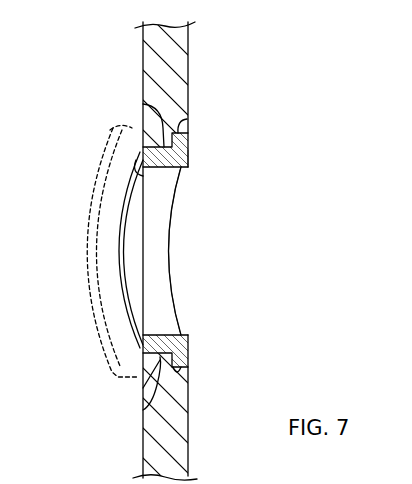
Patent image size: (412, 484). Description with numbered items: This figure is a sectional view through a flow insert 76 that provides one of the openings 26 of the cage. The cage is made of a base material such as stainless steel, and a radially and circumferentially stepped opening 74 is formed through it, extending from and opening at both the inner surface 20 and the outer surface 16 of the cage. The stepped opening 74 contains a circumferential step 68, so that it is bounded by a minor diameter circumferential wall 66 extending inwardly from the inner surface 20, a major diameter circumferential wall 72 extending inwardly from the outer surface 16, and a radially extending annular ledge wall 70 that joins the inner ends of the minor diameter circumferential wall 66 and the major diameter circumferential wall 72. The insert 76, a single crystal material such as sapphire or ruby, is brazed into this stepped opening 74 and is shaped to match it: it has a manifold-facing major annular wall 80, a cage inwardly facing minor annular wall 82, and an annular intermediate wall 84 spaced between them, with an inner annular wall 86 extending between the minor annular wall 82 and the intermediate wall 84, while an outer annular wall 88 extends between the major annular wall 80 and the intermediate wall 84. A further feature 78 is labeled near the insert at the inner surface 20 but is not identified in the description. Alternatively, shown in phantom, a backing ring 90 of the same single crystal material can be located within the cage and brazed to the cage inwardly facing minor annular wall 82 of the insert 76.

The outer surface 16 is at (190, 444).
The inner surface 20 is at (143, 448).
The openings 26 is at (170, 280).
The minor diameter circumferential wall 66 is at (135, 193).
The circumferential step 68 is at (189, 148).
The annular ledge wall 70 is at (143, 105).
The major diameter circumferential wall 72 is at (188, 119).
The stepped opening 74 is at (190, 165).
The insert 76 is at (158, 241).
The lens bevel 78 is at (130, 153).
The manifold-facing major annular wall 80 is at (189, 348).
The cage inwardly facing minor annular wall 82 is at (138, 347).
The annular intermediate wall 84 is at (143, 412).
The inner annular wall 86 is at (143, 388).
The ring ledge 88 is at (172, 372).
The backing ring 90 is at (132, 128).